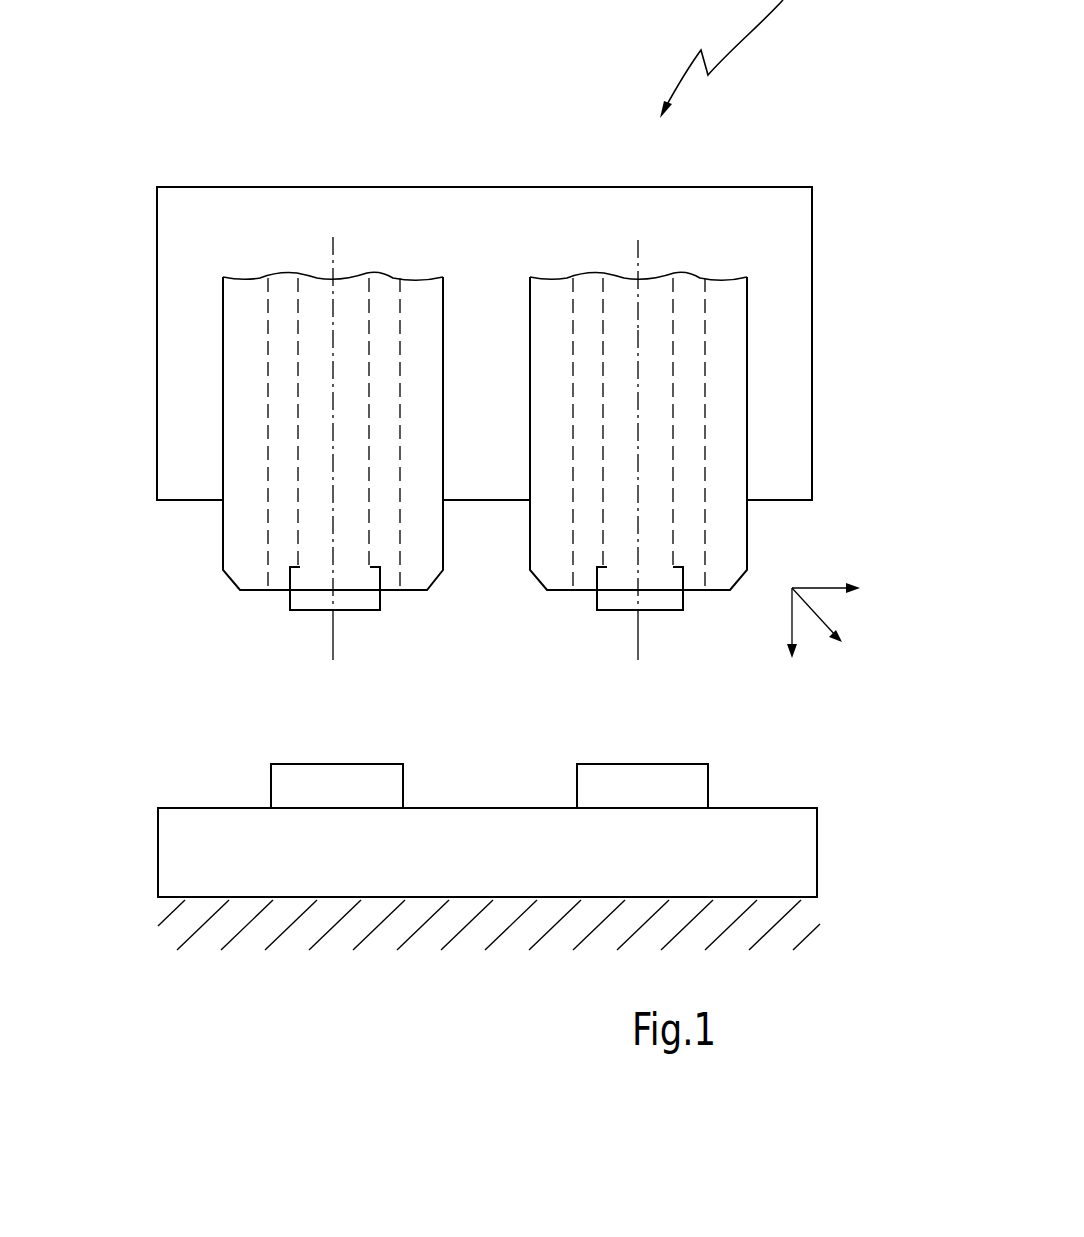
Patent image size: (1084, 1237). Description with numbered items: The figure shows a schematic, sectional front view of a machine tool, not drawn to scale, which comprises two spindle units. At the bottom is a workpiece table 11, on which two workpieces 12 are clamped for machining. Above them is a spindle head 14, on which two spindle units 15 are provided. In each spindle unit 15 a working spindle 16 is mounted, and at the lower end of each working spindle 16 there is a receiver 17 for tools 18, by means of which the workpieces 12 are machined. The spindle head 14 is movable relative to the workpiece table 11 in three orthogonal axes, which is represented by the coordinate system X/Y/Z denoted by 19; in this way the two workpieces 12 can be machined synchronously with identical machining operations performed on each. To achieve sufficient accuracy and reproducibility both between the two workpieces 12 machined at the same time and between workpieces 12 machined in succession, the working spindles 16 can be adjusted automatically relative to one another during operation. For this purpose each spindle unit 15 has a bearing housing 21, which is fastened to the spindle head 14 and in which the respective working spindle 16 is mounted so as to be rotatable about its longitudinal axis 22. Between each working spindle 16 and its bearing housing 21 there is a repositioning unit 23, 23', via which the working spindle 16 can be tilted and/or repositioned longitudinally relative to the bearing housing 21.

The workpiece table 11 is at (428, 853).
The workpieces 12 is at (363, 787).
The spindle head 14 is at (361, 218).
The spindle unit 15 is at (222, 534).
The working spindle 16 is at (328, 314).
The receiver 17 is at (318, 573).
The tools 18 is at (334, 655).
The coordinate system X/Y/Z 19 is at (860, 628).
The bearing housing 21 is at (247, 353).
The longitudinal axis 22 is at (337, 372).
The repositioning unit 23 is at (219, 422).
The repositioning unit 23' is at (751, 422).